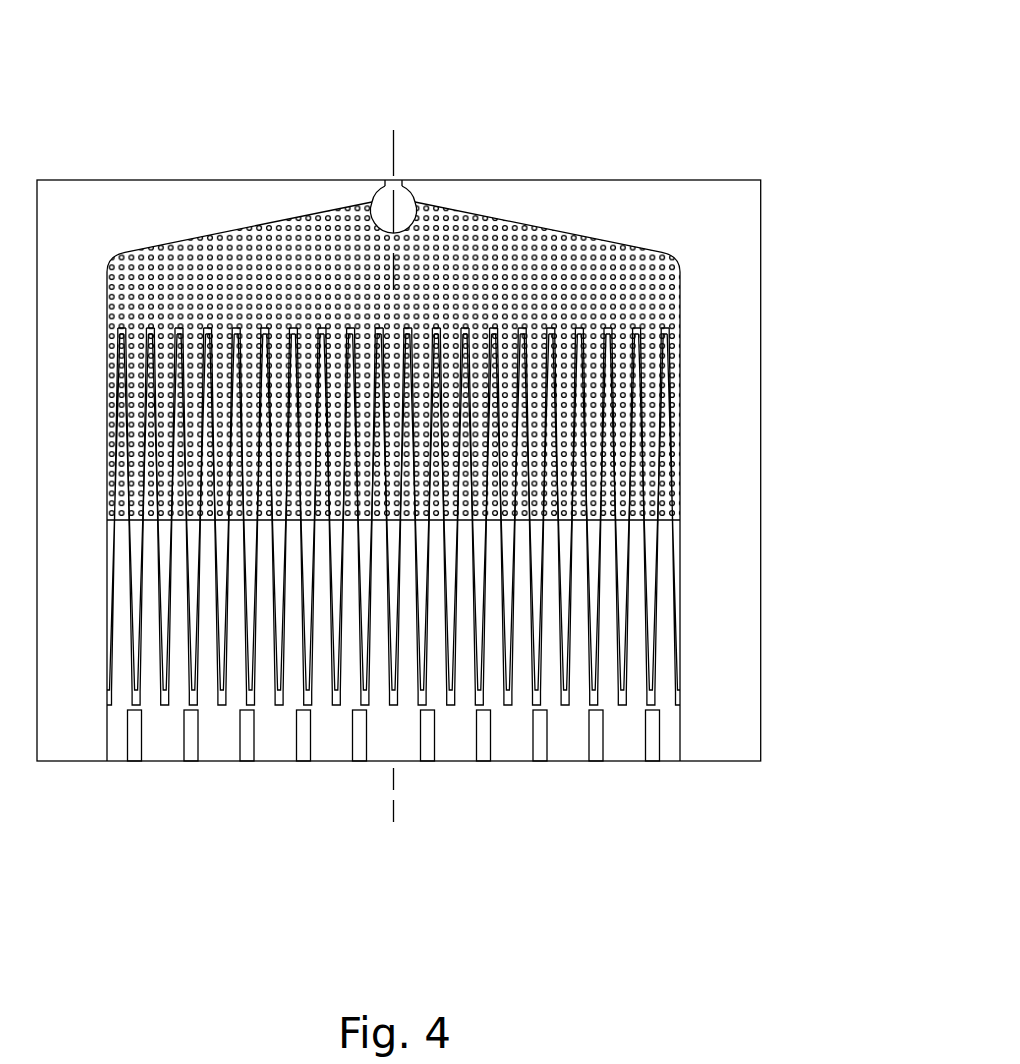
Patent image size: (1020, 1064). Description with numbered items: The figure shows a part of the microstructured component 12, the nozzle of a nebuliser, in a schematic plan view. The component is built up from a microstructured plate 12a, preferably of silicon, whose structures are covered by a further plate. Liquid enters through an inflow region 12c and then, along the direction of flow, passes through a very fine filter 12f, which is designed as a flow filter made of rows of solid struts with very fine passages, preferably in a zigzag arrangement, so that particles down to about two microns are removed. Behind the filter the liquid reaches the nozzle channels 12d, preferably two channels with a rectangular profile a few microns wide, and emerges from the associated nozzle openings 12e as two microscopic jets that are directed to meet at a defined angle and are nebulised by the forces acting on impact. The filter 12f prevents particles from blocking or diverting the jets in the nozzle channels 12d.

The microstructured component 12 is at (503, 148).
The microstructured plate 12a is at (632, 202).
The inflow region 12c is at (576, 682).
The nozzle channels 12d is at (378, 190).
The nozzle openings 12e is at (391, 178).
The very fine filter 12f is at (273, 637).